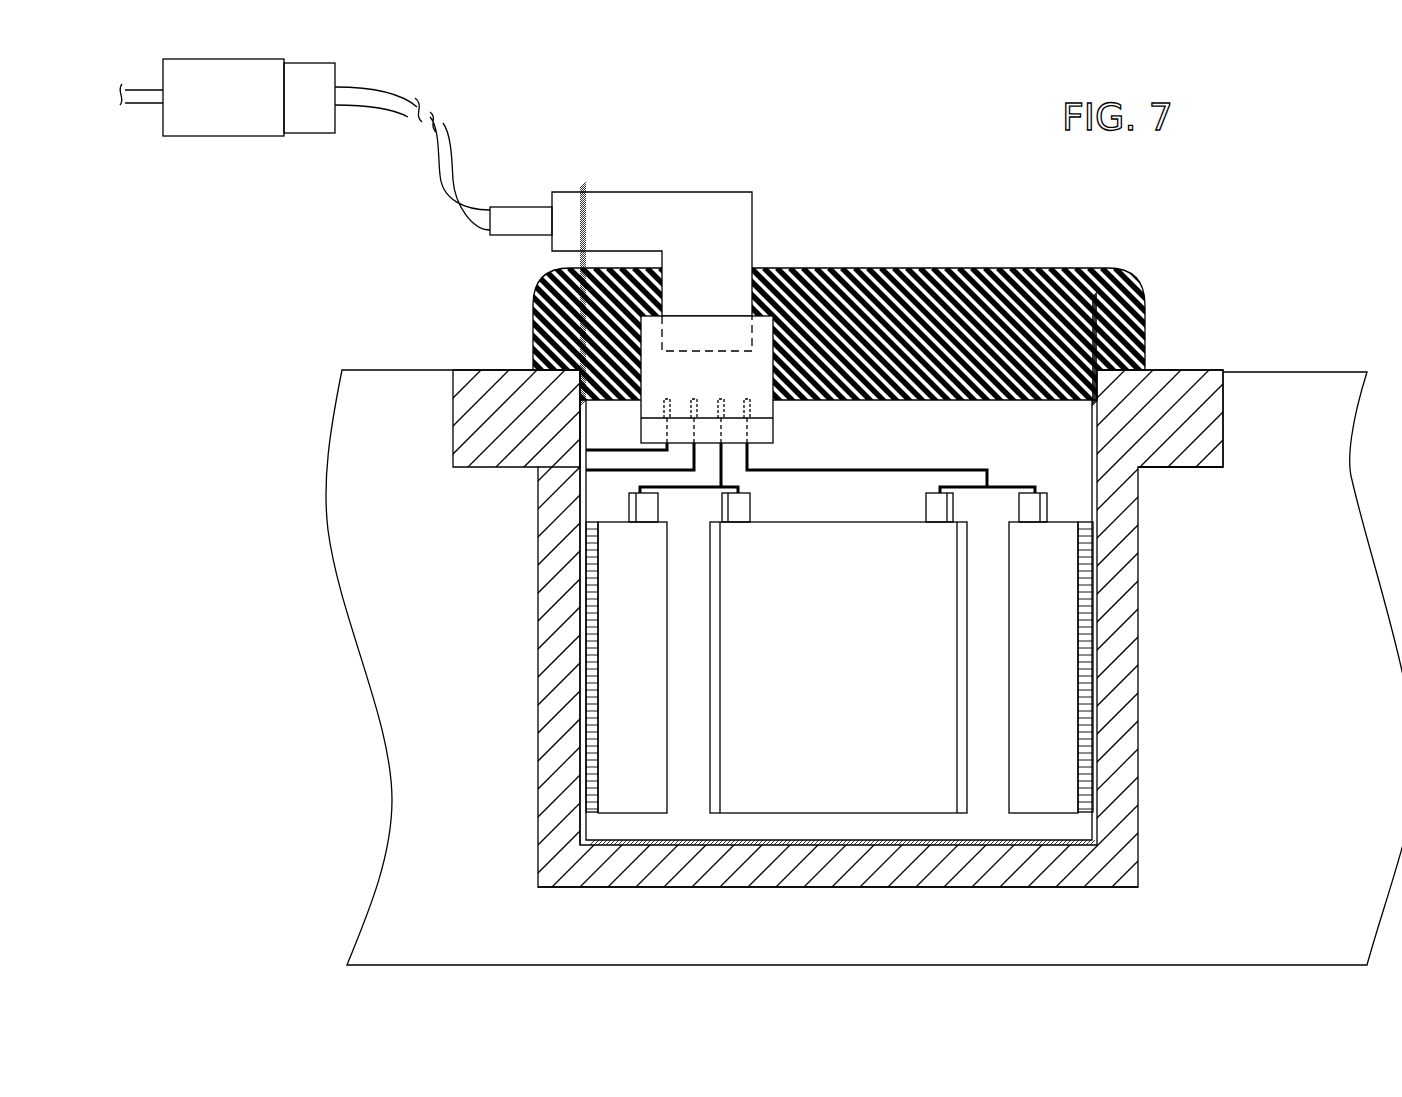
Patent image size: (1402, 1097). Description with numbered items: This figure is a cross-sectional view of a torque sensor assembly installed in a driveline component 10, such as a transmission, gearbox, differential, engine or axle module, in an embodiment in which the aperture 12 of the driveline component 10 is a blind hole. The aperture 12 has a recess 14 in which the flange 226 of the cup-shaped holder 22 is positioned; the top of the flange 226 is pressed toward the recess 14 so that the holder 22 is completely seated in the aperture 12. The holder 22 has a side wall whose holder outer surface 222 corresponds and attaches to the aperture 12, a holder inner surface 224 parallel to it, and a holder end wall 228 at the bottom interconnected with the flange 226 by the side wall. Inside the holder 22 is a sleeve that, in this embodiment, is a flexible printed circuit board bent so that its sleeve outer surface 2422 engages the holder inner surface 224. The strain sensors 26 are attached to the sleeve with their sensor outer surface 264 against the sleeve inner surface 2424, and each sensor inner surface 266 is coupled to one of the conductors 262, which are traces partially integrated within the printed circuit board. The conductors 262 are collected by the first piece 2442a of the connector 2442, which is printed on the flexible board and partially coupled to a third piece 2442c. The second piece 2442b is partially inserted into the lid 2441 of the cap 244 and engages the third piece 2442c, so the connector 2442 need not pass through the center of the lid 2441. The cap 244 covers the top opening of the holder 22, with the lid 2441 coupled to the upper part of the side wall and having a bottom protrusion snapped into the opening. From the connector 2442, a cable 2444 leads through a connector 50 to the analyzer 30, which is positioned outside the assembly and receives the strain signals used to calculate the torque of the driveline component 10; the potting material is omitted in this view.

The driveline component 10 is at (462, 670).
The aperture 12 is at (1217, 380).
The recess 14 is at (1197, 467).
The holder 22 is at (701, 511).
The strain sensor 26 is at (838, 653).
The analyzer 30 is at (243, 110).
The connector 50 is at (323, 110).
The holder outer surface 222 is at (1138, 828).
The holder inner surface 224 is at (951, 667).
The flange 226 is at (473, 368).
The holder end wall 228 is at (658, 887).
The cap 244 is at (814, 256).
The conductors 262 is at (920, 470).
The sensor outer surface 264 is at (1100, 603).
The sensor inner surface 266 is at (765, 722).
The sleeve outer surface 2422 is at (1085, 753).
The sleeve inner surface 2424 is at (895, 508).
The lid 2441 is at (983, 267).
The connector 2442 is at (713, 257).
The first piece 2442a is at (750, 387).
The second piece 2442b is at (710, 232).
The third piece 2442c is at (757, 433).
The cable 2444 is at (453, 165).